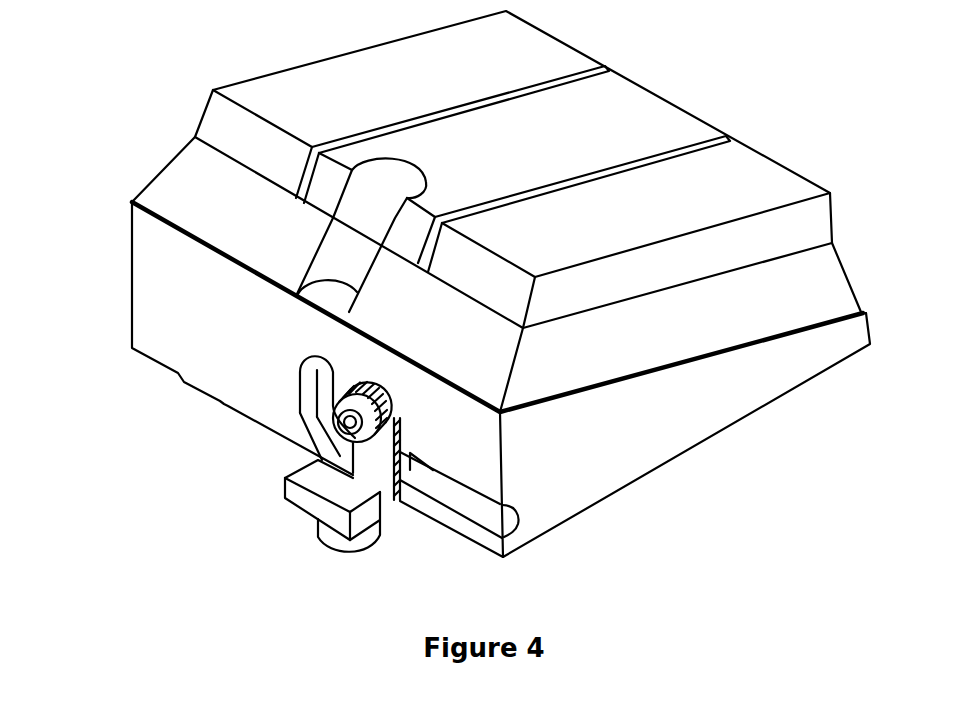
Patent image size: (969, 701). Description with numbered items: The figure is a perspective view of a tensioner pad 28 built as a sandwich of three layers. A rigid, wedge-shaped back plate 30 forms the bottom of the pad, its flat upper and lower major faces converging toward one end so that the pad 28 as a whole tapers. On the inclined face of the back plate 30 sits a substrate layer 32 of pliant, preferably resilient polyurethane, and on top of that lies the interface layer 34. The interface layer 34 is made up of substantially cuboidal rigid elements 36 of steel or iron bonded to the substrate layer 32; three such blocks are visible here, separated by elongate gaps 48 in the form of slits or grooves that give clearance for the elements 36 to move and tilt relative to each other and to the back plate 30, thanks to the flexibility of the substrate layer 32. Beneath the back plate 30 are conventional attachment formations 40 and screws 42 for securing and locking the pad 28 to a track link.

The tensioner pad 28 is at (106, 93).
The back plate 30 is at (682, 428).
The substrate layer 32 is at (828, 287).
The interface layer 34 is at (716, 90).
The rigid elements 36 is at (372, 61).
The attachment formations 40 is at (297, 498).
The screws 42 is at (380, 416).
The elongate gaps 48 is at (492, 97).